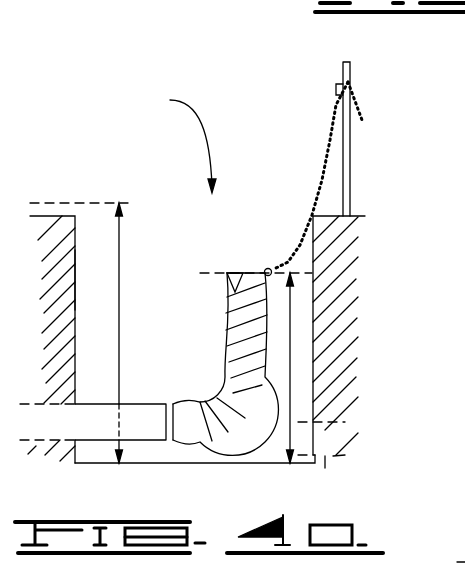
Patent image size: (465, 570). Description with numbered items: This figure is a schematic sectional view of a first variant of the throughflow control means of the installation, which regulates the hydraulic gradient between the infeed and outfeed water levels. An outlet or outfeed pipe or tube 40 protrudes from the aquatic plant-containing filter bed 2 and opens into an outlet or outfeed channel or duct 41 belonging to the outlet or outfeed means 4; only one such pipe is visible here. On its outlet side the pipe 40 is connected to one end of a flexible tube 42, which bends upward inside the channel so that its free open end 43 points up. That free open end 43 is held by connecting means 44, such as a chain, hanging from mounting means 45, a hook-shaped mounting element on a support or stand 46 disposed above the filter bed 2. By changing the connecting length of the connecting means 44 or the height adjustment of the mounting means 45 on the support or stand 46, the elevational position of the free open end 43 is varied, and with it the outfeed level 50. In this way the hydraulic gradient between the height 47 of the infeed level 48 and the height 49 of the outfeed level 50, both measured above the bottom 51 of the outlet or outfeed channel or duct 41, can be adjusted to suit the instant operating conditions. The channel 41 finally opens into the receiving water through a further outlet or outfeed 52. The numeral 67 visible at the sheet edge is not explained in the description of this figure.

The aquatic plant-containing filter bed 2 is at (48, 339).
The outlet or outfeed means 4 is at (182, 142).
The outlet or outfeed pipe or tube 40 is at (28, 440).
The outlet or outfeed channel or duct 41 is at (75, 278).
The flexible tube 42 is at (240, 338).
The free open end 43 is at (228, 290).
The connecting means 44 is at (322, 172).
The mounting means 45 is at (338, 90).
The support or stand 46 is at (346, 150).
The height of the infeed level 47 is at (119, 290).
The infeed level 48 is at (37, 203).
The height of the outfeed level 49 is at (290, 358).
The outfeed level 50 is at (222, 273).
The bottom of the outlet or outfeed channel or duct 51 is at (165, 463).
The further outlet or outfeed 52 is at (327, 456).
The adjacent figure element 67 is at (447, 560).